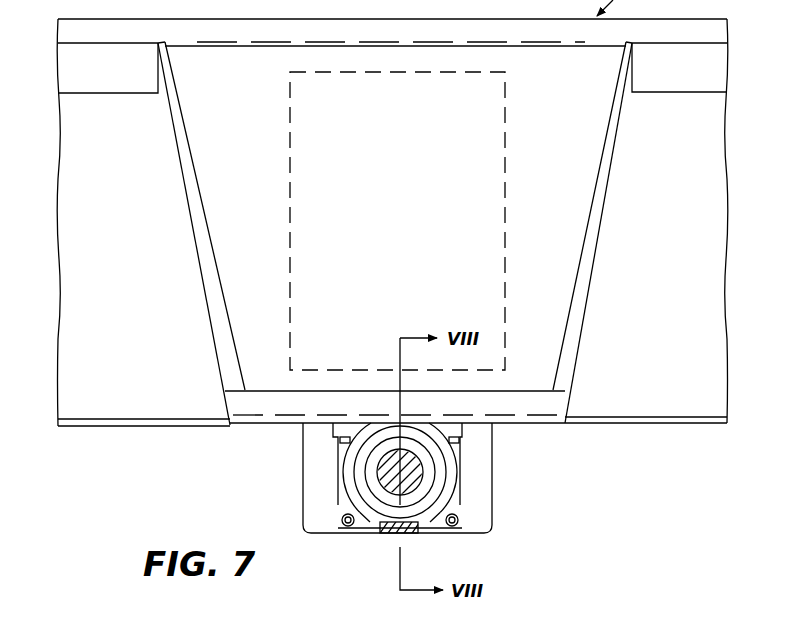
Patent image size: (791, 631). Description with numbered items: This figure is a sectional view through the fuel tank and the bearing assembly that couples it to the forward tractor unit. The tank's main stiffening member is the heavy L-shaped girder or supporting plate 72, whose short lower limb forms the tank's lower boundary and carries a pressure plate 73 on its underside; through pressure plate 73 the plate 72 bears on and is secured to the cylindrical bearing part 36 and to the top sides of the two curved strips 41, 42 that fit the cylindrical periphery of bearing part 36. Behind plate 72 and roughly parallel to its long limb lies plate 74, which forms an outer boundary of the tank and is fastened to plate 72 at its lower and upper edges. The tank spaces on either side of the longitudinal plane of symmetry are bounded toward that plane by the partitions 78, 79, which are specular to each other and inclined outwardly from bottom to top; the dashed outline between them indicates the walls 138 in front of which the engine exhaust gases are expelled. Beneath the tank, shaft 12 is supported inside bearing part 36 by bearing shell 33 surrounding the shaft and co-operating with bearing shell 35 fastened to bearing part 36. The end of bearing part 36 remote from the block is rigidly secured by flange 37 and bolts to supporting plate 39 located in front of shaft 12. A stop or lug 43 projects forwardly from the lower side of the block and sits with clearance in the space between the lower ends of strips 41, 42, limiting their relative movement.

The supporting plate 72 is at (212, 63).
The partition 78 is at (204, 243).
The partition 79 is at (594, 210).
The pressure plate 73 is at (553, 421).
The plate 74 is at (121, 400).
The walls 138 is at (487, 165).
The supporting plate 39 is at (307, 461).
The bearing part 36 is at (440, 458).
The curved strip 42 is at (452, 488).
The shaft 12 is at (410, 458).
The bearing shell 33 is at (374, 477).
The bearing shell 35 is at (368, 490).
The curved strip 41 is at (338, 510).
The flange 37 is at (358, 532).
The lug 43 is at (393, 537).